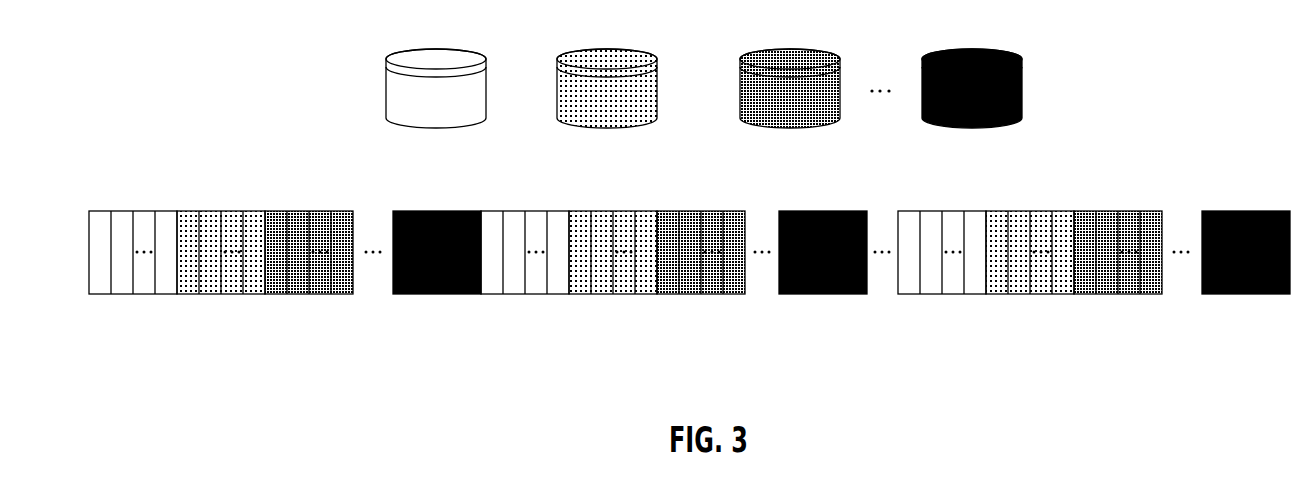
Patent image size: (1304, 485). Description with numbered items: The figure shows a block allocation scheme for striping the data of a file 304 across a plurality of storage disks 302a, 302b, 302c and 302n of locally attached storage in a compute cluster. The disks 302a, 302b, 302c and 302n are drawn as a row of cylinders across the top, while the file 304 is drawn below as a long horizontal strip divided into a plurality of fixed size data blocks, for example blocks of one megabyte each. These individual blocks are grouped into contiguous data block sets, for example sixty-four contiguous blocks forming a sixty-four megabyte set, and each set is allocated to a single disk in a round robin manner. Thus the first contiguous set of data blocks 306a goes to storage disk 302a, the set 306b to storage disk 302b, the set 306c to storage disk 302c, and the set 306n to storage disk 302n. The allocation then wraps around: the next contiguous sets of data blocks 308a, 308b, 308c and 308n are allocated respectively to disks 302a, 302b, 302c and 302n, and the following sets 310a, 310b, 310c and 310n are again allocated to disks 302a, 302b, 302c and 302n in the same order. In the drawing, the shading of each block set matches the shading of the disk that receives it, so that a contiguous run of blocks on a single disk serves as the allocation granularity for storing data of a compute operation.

The storage disk 302a is at (441, 48).
The storage disk 302b is at (612, 48).
The storage disk 302c is at (795, 48).
The storage disk 302n is at (977, 48).
The file 304 is at (89, 211).
The contiguous set of data blocks 306a is at (177, 297).
The contiguous set of data blocks 306b is at (265, 297).
The contiguous set of data blocks 306c is at (353, 297).
The contiguous set of data blocks 306n is at (481, 297).
The contiguous set of data blocks 308a is at (569, 297).
The contiguous set of data blocks 308b is at (657, 297).
The contiguous set of data blocks 308c is at (745, 297).
The contiguous set of data blocks 308n is at (867, 297).
The contiguous set of data blocks 310a is at (986, 297).
The contiguous set of data blocks 310b is at (1074, 297).
The contiguous set of data blocks 310c is at (1162, 297).
The contiguous set of data blocks 310n is at (1290, 297).